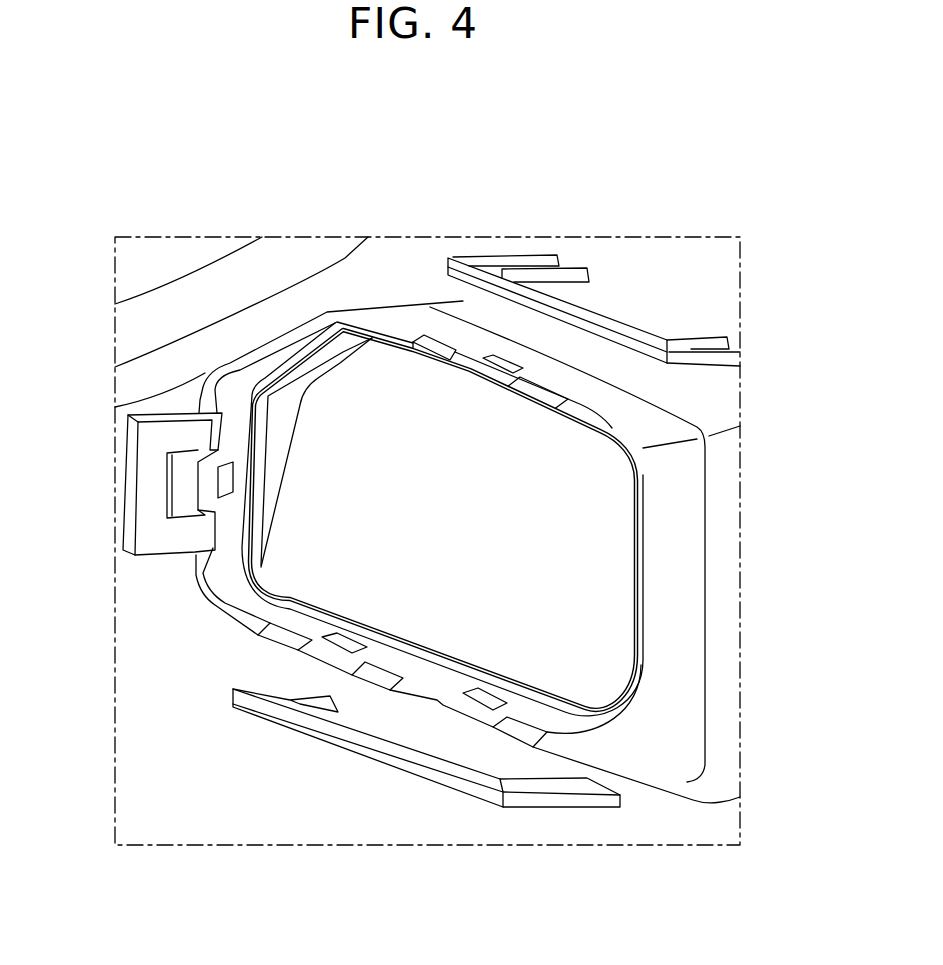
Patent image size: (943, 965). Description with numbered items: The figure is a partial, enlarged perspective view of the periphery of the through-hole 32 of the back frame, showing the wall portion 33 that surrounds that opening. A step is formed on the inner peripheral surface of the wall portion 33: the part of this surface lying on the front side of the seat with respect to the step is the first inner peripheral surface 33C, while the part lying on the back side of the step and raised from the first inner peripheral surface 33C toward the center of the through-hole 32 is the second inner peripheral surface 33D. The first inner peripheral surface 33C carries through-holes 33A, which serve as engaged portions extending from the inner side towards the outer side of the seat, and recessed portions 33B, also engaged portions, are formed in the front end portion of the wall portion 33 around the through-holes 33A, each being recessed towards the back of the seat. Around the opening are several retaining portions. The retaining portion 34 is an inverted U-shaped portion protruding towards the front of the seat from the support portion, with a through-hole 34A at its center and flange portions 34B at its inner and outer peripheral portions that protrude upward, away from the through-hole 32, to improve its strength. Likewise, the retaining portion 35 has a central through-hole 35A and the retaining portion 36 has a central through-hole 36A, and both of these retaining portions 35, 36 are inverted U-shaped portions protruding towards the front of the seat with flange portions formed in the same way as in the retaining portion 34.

The through-hole 32 is at (635, 680).
The wall portion 33 is at (667, 567).
The through-holes 33A is at (503, 360).
The recessed portions 33B is at (264, 655).
The first inner peripheral surface 33C is at (227, 593).
The second inner peripheral surface 33D is at (272, 462).
The retaining portion 34 is at (527, 210).
The through-hole 34A is at (620, 297).
The flange portions 34B is at (478, 262).
The retaining portion 35 is at (147, 447).
The through-hole 35A is at (168, 485).
The retaining portion 36 is at (456, 793).
The through-hole 36A is at (372, 730).